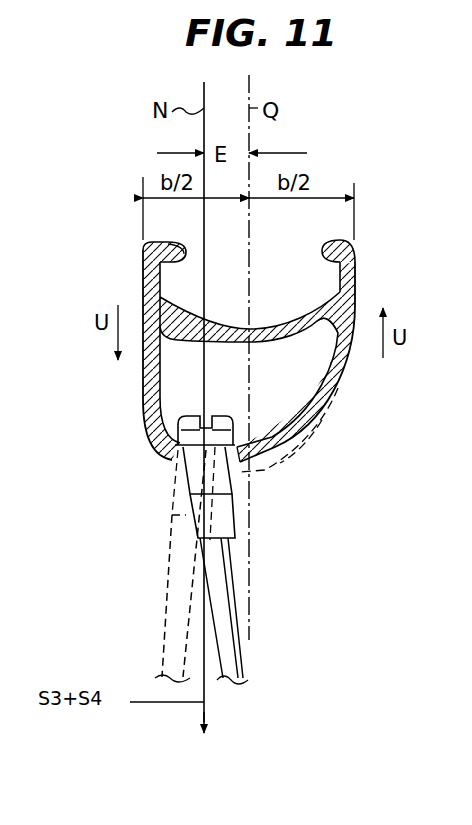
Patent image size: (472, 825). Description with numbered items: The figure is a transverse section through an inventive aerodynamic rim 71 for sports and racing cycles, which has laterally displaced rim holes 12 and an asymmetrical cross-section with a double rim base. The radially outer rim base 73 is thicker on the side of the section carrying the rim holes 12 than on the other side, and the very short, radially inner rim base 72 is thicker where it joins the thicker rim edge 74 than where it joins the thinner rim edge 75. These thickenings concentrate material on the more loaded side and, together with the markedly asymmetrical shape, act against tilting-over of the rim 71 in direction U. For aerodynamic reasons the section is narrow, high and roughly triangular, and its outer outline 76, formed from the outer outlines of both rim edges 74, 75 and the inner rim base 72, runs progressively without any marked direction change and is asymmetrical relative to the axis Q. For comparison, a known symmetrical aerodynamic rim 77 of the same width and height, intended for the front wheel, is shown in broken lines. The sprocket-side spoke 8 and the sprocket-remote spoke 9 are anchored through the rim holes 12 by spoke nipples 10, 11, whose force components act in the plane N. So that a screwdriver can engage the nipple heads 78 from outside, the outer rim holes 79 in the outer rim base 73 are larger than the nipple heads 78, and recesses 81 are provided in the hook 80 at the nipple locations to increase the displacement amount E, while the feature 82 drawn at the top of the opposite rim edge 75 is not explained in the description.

The aerodynamic rim 71 is at (120, 205).
The thicker rim edge 74 is at (152, 396).
The recesses 81 is at (165, 240).
The hook 80 is at (177, 254).
The outer rim holes 79 is at (155, 298).
The second bead hook flange 82 is at (345, 248).
The radially outer rim base 73 is at (296, 327).
The thinner rim edge 75 is at (322, 378).
The outer outline 76 is at (312, 402).
The symmetrical aerodynamic rim 77 is at (306, 430).
The nipple heads 78 is at (183, 430).
The rim holes 12 is at (188, 459).
The spoke nipple 10 is at (240, 523).
The spoke nipple 11 is at (186, 512).
The sprocket-side spoke 8 is at (228, 610).
The sprocket-remote spoke 9 is at (178, 608).
The radially inner rim base 72 is at (232, 462).